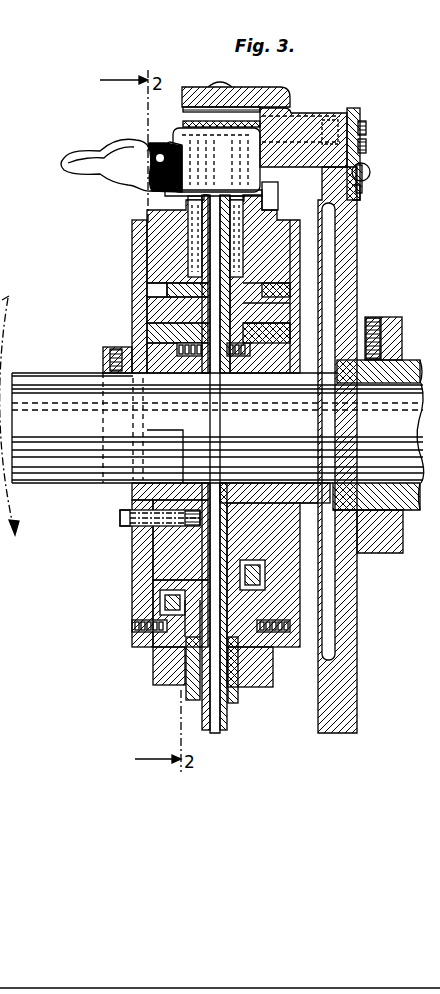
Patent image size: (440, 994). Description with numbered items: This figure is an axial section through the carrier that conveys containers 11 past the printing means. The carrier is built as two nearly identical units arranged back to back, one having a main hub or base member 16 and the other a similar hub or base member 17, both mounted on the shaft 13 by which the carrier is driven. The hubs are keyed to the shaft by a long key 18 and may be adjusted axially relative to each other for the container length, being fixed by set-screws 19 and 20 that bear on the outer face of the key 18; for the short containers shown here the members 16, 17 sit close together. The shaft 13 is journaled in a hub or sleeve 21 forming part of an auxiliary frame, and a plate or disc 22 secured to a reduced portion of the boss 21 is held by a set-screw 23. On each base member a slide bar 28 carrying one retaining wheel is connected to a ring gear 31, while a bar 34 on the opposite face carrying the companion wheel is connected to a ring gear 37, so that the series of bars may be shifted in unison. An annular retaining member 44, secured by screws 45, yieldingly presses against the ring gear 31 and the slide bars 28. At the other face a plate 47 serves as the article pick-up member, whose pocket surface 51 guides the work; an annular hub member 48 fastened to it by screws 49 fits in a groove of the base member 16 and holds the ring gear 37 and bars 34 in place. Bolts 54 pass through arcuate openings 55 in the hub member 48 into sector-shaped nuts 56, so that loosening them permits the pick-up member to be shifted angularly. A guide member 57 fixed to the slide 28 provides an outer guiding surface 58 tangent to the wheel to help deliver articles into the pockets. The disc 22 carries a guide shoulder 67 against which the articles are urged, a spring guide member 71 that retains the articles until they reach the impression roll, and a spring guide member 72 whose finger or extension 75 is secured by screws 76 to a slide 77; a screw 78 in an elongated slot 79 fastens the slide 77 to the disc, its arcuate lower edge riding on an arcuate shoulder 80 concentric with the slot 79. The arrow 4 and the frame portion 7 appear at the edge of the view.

The direction arrow 4 is at (9, 428).
The frame portion 7 is at (5, 306).
The container 11 is at (172, 148).
The shaft 13 is at (37, 468).
The main hub or base member 16 is at (153, 350).
The hub or base member 17 is at (268, 348).
The long key 18 is at (56, 381).
The set-screw 19 is at (110, 363).
The set-screw 20 is at (313, 362).
The hub or sleeve 21 is at (408, 514).
The plate or disc 22 is at (356, 663).
The set-screw 23 is at (383, 318).
The slide bar 28 is at (160, 290).
The ring gear 31 is at (158, 296).
The bar 34 is at (150, 324).
The ring gear 37 is at (203, 303).
The annular retaining member 44 is at (173, 607).
The screws 45 is at (133, 630).
The plate 47 is at (207, 265).
The annular hub member 48 is at (197, 338).
The screws 49 is at (187, 358).
The surface 51 is at (206, 732).
The bolts 54 is at (120, 518).
The arcuate openings 55 is at (177, 504).
The sector-shaped nuts 56 is at (140, 560).
The guide member 57 is at (190, 690).
The outer guiding surface 58 is at (192, 705).
The guide shoulder 67 is at (294, 105).
The spring guide member 71 is at (190, 100).
The spring guide member 72 is at (184, 126).
The finger or extension 75 is at (333, 110).
The screws 76 is at (370, 172).
The slide 77 is at (353, 110).
The screw 78 is at (366, 128).
The elongated slot 79 is at (366, 142).
The arcuate shoulder 80 is at (356, 196).